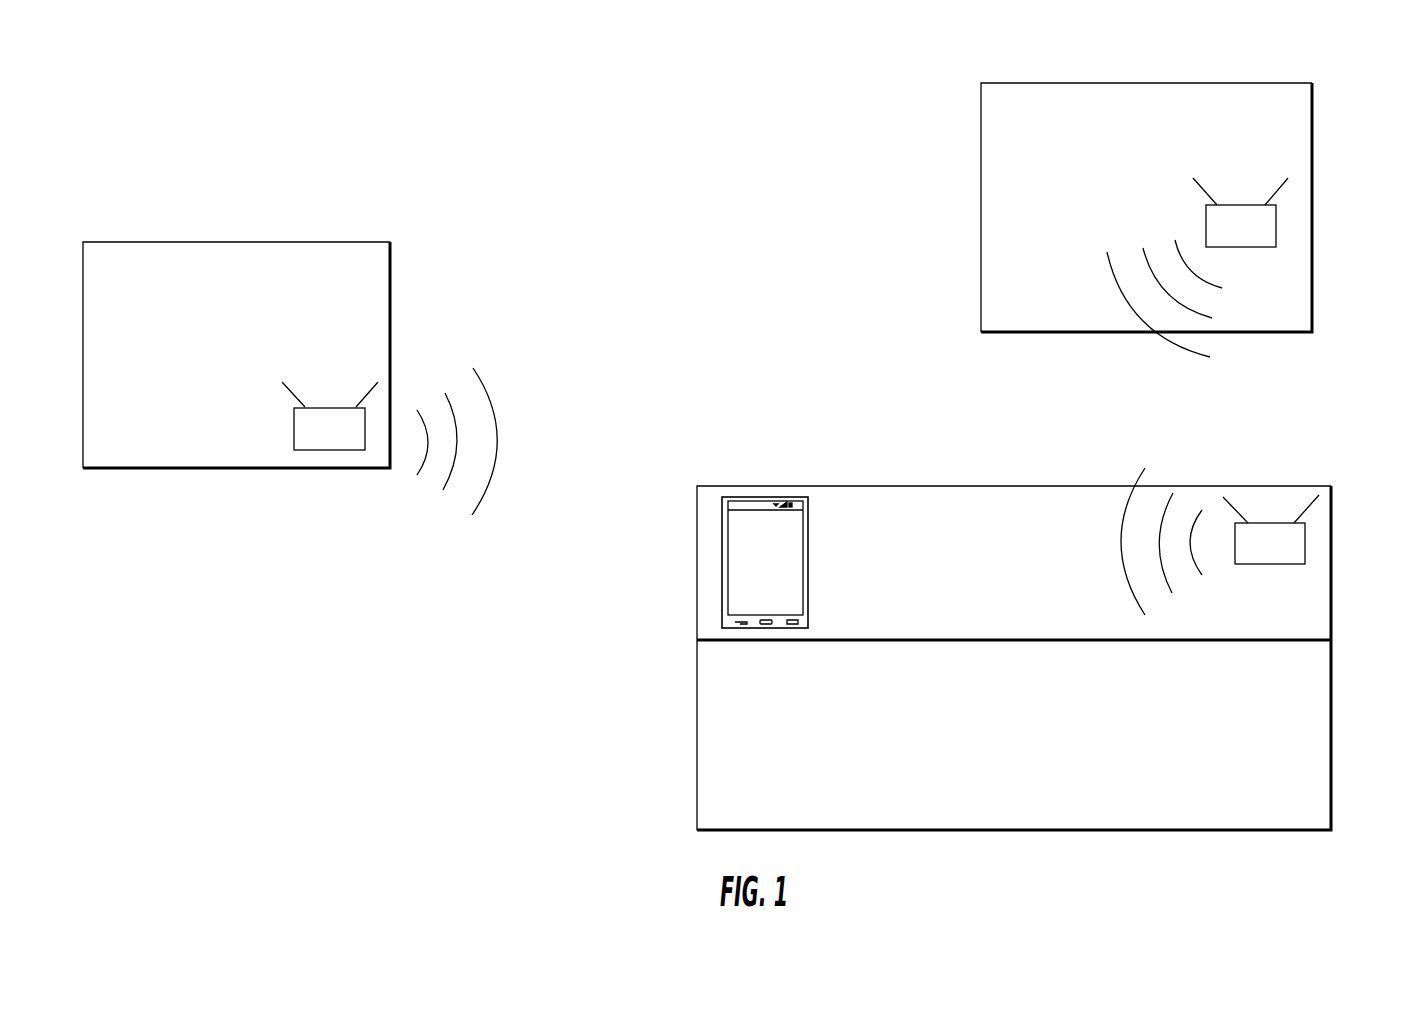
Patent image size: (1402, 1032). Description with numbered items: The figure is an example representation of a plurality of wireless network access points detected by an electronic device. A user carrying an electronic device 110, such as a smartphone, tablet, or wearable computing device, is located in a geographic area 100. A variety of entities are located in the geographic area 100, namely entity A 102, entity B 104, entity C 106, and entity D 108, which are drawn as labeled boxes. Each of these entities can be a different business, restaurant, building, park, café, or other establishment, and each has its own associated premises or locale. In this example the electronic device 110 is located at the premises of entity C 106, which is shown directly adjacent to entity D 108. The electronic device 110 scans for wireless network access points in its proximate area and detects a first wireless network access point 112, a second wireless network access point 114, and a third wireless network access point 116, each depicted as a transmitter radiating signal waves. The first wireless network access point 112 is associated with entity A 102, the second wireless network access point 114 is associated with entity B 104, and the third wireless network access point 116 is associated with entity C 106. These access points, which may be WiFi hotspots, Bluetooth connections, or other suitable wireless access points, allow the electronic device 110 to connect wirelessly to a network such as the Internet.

The geographic area 100 is at (575, 108).
The entity A 102 is at (238, 470).
The entity B 104 is at (1313, 293).
The entity C 106 is at (697, 608).
The entity D 108 is at (697, 730).
The electronic device 110 is at (809, 588).
The first wireless network access point 112 is at (338, 408).
The second wireless network access point 114 is at (1207, 205).
The third wireless network access point 116 is at (1270, 565).